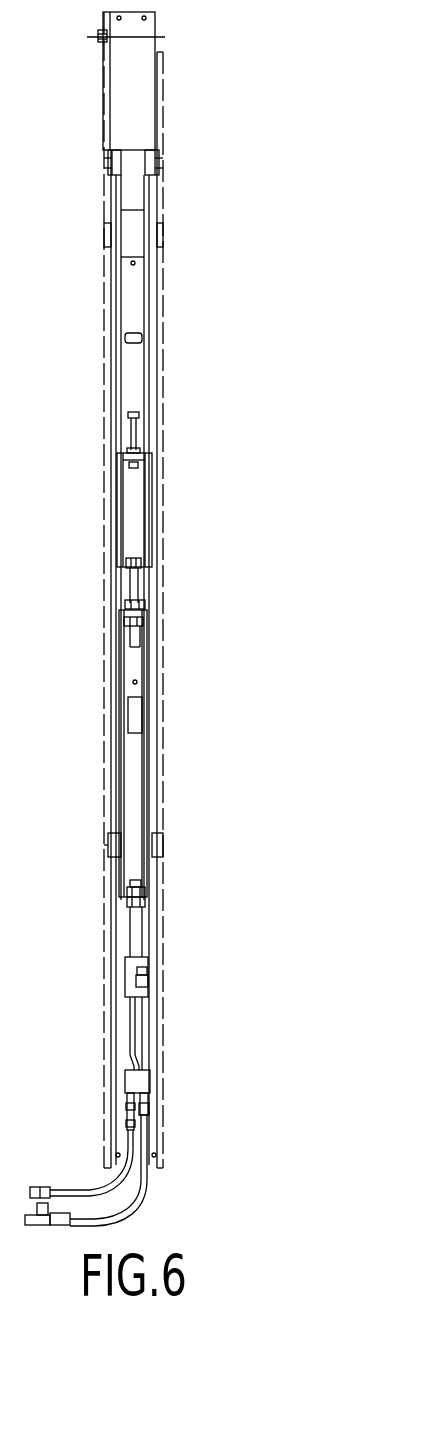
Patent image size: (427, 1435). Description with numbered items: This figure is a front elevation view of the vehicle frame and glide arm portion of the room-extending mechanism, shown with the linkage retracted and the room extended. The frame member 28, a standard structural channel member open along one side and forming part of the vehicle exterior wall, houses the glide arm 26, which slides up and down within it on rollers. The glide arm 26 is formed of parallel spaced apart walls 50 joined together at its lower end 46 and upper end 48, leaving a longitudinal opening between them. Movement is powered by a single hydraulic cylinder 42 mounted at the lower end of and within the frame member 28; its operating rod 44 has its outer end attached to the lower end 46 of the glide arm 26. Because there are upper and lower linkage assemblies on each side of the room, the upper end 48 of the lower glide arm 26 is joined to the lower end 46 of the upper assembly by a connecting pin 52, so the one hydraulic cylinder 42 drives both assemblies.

The glide arm 26 is at (135, 498).
The frame member 28 is at (135, 43).
The hydraulic cylinder 42 is at (142, 1082).
The operating rod 44 is at (138, 943).
The lower end 46 is at (145, 570).
The upper end 48 is at (153, 622).
The parallel spaced apart walls 50 is at (113, 675).
The connecting pin 52 is at (137, 582).